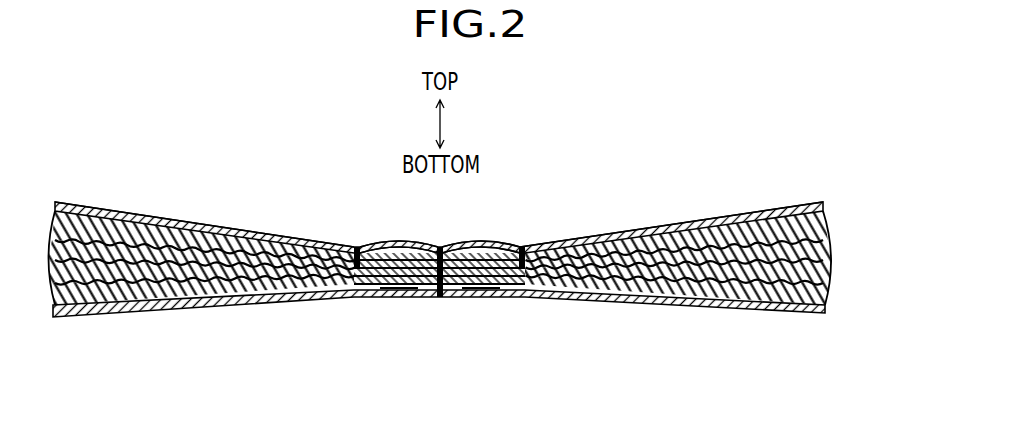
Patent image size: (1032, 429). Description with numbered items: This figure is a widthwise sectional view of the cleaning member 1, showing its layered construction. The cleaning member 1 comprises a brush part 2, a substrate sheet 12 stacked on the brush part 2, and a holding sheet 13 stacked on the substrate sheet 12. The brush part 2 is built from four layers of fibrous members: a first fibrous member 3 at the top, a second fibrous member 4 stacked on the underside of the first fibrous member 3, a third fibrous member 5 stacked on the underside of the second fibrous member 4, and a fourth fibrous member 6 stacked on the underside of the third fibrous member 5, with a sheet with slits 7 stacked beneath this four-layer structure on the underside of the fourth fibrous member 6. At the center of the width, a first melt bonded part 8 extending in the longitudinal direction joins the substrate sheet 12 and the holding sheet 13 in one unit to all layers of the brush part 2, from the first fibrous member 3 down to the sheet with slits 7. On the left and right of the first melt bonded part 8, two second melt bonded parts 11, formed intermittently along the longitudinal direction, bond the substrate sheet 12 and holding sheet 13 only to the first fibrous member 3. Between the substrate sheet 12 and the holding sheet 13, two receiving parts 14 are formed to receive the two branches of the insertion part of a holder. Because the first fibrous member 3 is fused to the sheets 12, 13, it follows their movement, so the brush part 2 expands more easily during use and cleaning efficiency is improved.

The cleaning member 1 is at (653, 171).
The brush part 2 is at (875, 207).
The first fibrous member 3 is at (826, 230).
The second fibrous member 4 is at (828, 252).
The third fibrous member 5 is at (828, 275).
The fourth fibrous member 6 is at (827, 294).
The sheet with slits 7 is at (825, 312).
The first melt bonded part 8 is at (441, 247).
The second melt bonded parts 11 is at (357, 247).
The substrate sheet 12 is at (823, 210).
The holding sheet 13 is at (800, 204).
The receiving part 14 is at (396, 243).